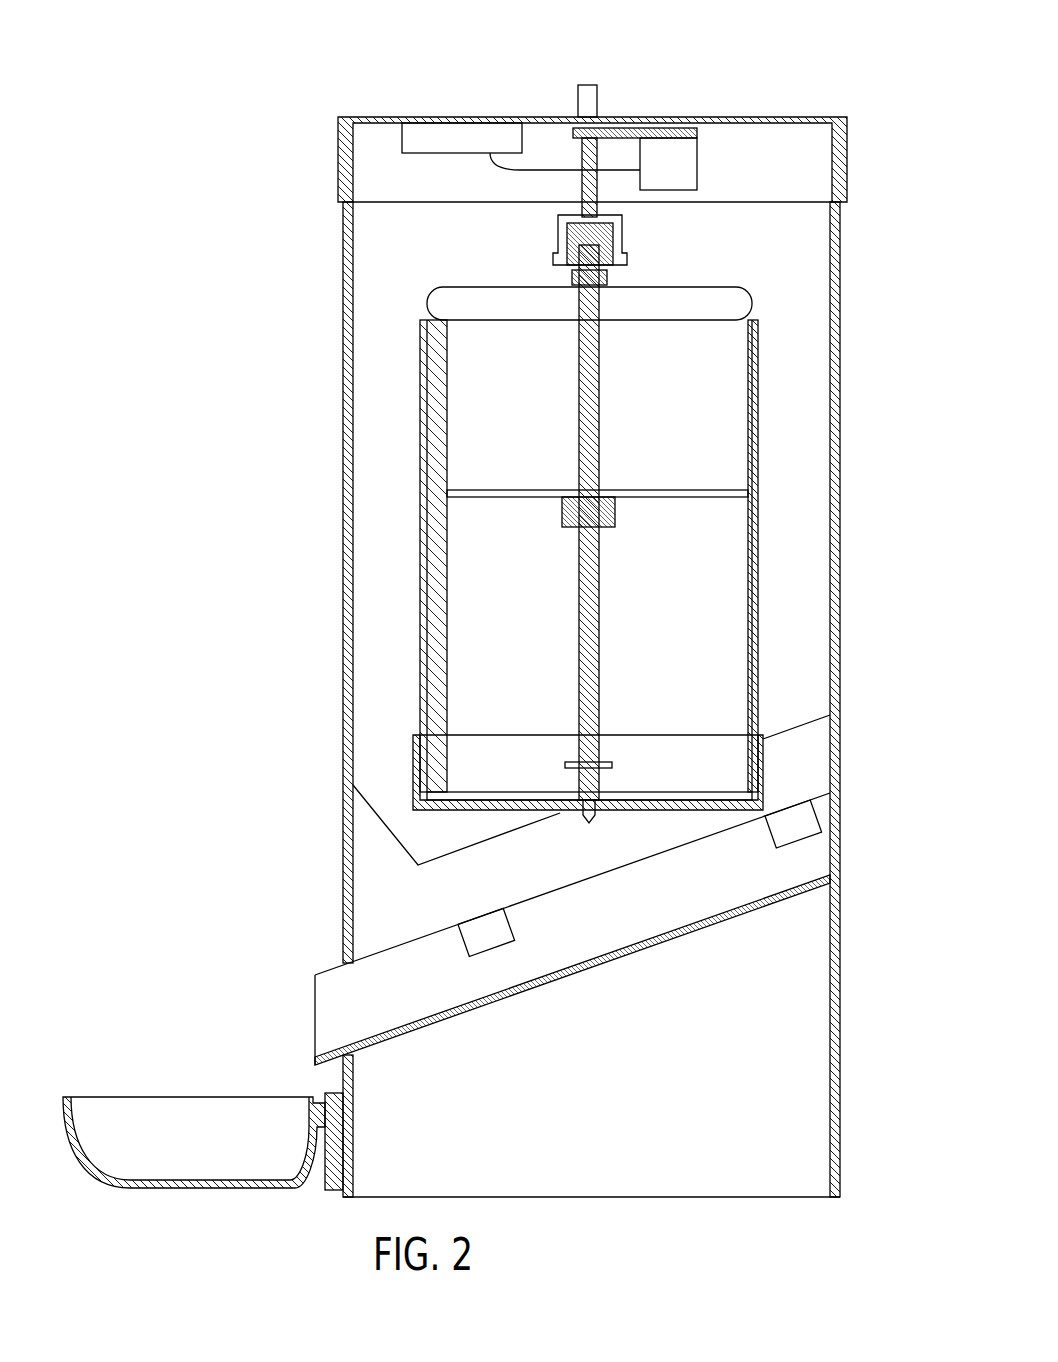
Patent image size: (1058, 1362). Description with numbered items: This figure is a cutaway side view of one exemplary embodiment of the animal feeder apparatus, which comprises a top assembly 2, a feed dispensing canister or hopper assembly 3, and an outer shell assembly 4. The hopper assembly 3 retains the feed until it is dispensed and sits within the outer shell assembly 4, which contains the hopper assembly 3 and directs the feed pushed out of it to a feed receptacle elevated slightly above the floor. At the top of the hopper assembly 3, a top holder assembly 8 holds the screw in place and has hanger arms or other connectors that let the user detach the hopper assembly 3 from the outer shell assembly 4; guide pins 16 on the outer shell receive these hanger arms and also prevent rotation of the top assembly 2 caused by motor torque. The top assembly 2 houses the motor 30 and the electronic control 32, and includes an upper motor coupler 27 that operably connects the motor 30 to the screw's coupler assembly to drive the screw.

The top assembly 2 is at (327, 153).
The hopper assembly 3 is at (408, 493).
The outer shell assembly 4 is at (322, 605).
The top holder assembly 8 is at (608, 274).
The guide pins 16 is at (597, 90).
The upper motor coupler 27 is at (553, 135).
The motor 30 is at (688, 150).
The electronic control 32 is at (450, 130).